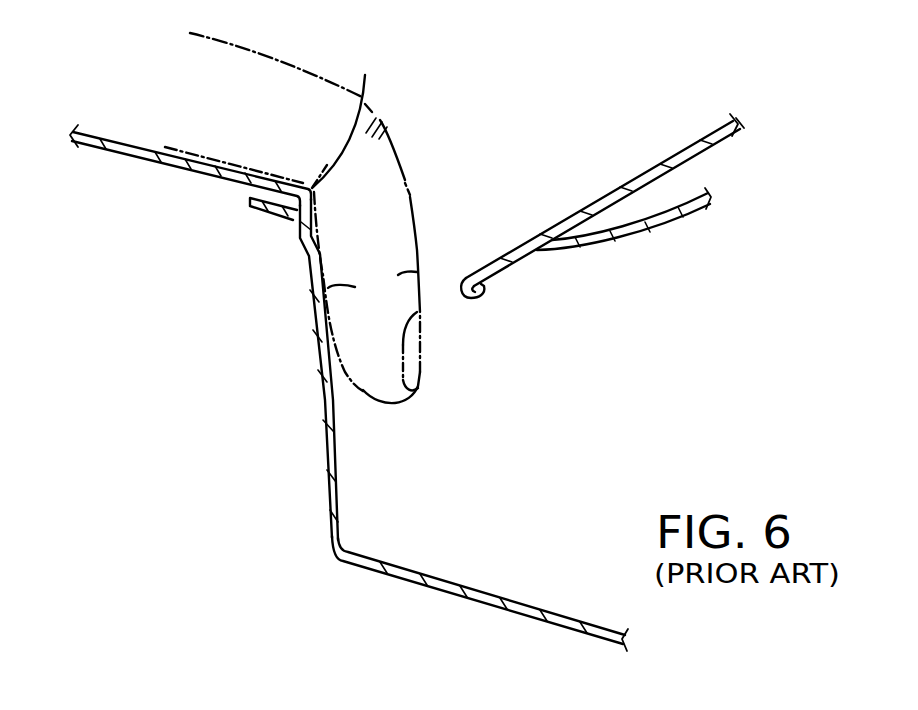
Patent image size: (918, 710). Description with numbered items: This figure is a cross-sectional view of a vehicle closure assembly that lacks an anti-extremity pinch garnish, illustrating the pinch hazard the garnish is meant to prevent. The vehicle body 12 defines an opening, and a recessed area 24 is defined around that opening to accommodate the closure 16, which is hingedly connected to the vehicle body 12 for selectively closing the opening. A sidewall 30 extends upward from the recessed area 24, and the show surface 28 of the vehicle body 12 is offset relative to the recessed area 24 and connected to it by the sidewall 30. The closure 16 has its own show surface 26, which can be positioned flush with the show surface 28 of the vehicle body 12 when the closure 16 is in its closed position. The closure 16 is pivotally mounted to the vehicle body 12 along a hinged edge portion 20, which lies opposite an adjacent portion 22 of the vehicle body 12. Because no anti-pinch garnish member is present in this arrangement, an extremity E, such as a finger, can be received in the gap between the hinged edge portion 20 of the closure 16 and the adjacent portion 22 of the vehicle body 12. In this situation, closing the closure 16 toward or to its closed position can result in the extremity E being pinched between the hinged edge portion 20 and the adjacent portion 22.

The vehicle body 12 is at (128, 143).
The closure 16 is at (690, 142).
The hinged edge portion 20 is at (469, 278).
The adjacent portion 22 is at (282, 110).
The recessed area 24 is at (450, 582).
The show surface of the closure 26 is at (603, 193).
The show surface of the vehicle body 28 is at (208, 159).
The sidewall 30 is at (334, 402).
The extremity E is at (395, 215).